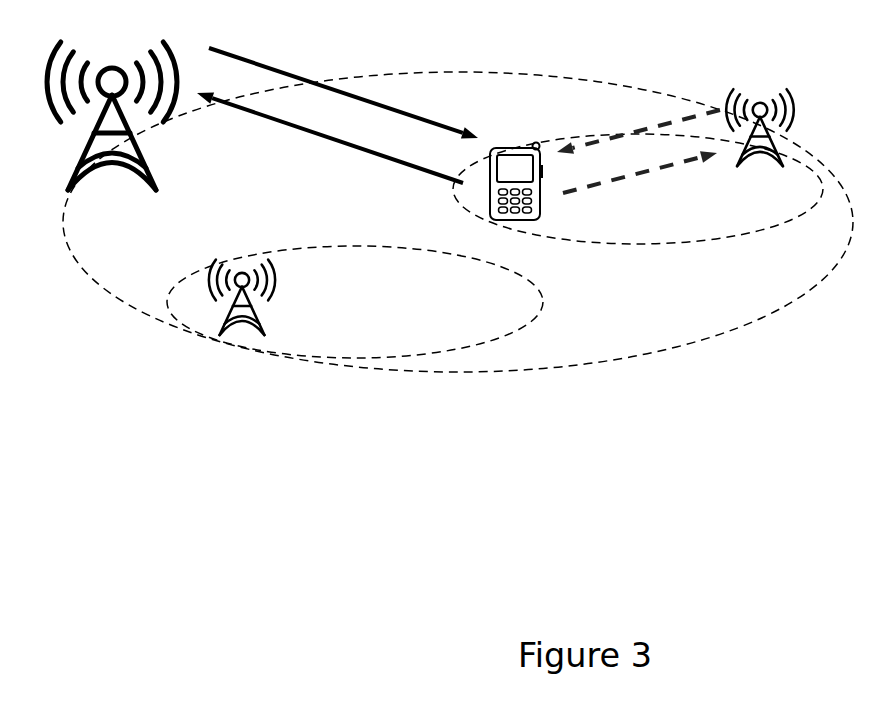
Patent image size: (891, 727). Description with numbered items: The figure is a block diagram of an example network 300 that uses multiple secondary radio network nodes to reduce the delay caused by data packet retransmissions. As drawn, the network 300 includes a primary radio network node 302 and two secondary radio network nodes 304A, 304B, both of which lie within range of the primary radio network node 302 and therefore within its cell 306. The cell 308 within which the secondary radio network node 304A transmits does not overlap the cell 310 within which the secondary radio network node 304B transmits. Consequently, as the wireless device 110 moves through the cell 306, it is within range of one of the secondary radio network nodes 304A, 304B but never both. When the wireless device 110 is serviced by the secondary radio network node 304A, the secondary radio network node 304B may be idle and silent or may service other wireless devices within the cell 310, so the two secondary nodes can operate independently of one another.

The network 300 is at (450, 199).
The primary radio network node 302 is at (112, 101).
The secondary radio network node 304A is at (789, 116).
The secondary radio network node 304B is at (273, 300).
The cell 306 is at (458, 204).
The cell 308 is at (638, 216).
The cell 310 is at (355, 302).
The wireless device 110 is at (527, 207).